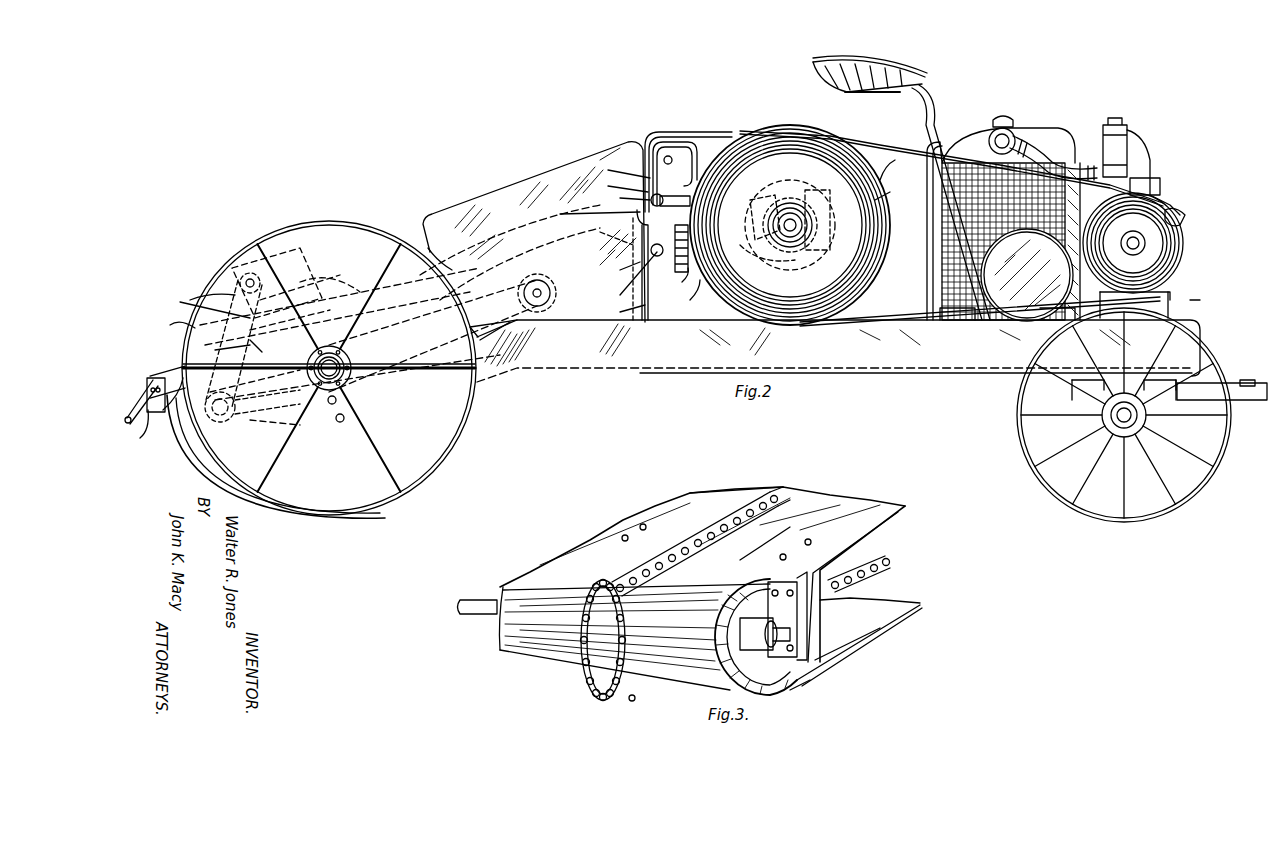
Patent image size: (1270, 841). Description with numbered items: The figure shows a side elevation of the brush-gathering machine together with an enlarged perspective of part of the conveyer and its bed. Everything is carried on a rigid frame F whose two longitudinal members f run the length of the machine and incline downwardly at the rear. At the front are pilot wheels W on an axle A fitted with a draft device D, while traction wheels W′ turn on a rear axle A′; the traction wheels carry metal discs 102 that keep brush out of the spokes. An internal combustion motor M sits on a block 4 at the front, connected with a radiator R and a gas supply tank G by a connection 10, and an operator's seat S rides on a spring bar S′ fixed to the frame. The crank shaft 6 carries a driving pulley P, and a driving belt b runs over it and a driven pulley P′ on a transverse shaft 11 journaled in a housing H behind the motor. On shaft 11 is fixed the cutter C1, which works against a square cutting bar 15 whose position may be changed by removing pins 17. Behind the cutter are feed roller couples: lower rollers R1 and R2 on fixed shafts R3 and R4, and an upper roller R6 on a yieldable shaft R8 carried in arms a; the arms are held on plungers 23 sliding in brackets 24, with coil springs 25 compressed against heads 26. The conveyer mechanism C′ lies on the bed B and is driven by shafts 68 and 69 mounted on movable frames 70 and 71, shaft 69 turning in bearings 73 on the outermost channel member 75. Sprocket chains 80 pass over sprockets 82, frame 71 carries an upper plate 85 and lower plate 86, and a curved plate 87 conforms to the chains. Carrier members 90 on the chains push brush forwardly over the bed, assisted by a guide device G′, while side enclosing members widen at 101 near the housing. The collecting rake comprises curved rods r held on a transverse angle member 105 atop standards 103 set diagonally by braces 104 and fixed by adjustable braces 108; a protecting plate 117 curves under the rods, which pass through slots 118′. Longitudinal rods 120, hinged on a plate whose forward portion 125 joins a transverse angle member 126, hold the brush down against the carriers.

In FIG. 2, the traction wheels W′ is at (380, 218).
In FIG. 2, the pilot wheels W is at (1017, 415).
In FIG. 2, the axle A is at (1130, 418).
In FIG. 2, the rear axle A′ is at (345, 362).
In FIG. 2, the bed B is at (360, 334).
In FIG. 3, the bed B is at (702, 591).
In FIG. 2, the conveyer mechanism C′ is at (347, 292).
In FIG. 2, the cutter C1 is at (817, 230).
In FIG. 2, the draft device D is at (1235, 382).
In FIG. 2, the frame F is at (838, 339).
In FIG. 2, the longitudinal members f is at (1195, 313).
In FIG. 2, the gas supply tank G is at (1010, 242).
In FIG. 2, the guide device G′ is at (155, 388).
In FIG. 2, the housing H is at (738, 128).
In FIG. 2, the internal combustion motor M is at (1160, 185).
In FIG. 2, the driving pulley P is at (1150, 258).
In FIG. 2, the driven pulley P′ is at (890, 190).
In FIG. 2, the radiator R is at (1020, 136).
In FIG. 2, the lower roller R1 is at (790, 225).
In FIG. 2, the lower roller R2 is at (628, 276).
In FIG. 2, the transverse shaft R3 is at (790, 224).
In FIG. 2, the transverse shaft R4 is at (621, 309).
In FIG. 2, the upper roller R6 is at (619, 171).
In FIG. 2, the yieldable transverse shaft R8 is at (616, 185).
In FIG. 2, the operator's seat S is at (915, 70).
In FIG. 2, the spring bar S′ is at (926, 118).
In FIG. 2, the arms a is at (629, 195).
In FIG. 2, the driving belt b is at (887, 170).
In FIG. 2, the slot c is at (666, 158).
In FIG. 2, the guard n is at (185, 458).
In FIG. 2, the curved rods r is at (192, 304).
In FIG. 2, the block 4 is at (1146, 295).
In FIG. 2, the crank shaft 6 is at (1140, 244).
In FIG. 2, the pipe 10 is at (1050, 152).
In FIG. 2, the transverse shaft 11 is at (798, 224).
In FIG. 2, the cutting bar 15 is at (764, 209).
In FIG. 2, the pins 17 is at (767, 267).
In FIG. 2, the plungers 23 is at (600, 213).
In FIG. 2, the brackets 24 is at (623, 261).
In FIG. 2, the coil springs 25 is at (681, 281).
In FIG. 2, the head 26 is at (685, 294).
In FIG. 2, the transverse shaft 68 is at (552, 292).
In FIG. 2, the transverse shaft 69 is at (300, 398).
In FIG. 3, the transverse shaft 69 is at (815, 677).
In FIG. 2, the movable frame 70 is at (500, 332).
In FIG. 2, the movable frame 71 is at (327, 414).
In FIG. 3, the bearings 73 is at (795, 622).
In FIG. 3, the outermost channel member 75 is at (847, 647).
In FIG. 2, the sprocket chains 80 is at (482, 256).
In FIG. 3, the sprocket chains 80 is at (625, 566).
In FIG. 3, the sprockets 82 is at (598, 685).
In FIG. 3, the upper plate 85 is at (848, 504).
In FIG. 3, the lower plate 86 is at (890, 603).
In FIG. 3, the curved plate 87 is at (624, 638).
In FIG. 2, the carrier members 90 is at (240, 430).
In FIG. 2, the wider portion of side enclosing members 101 is at (534, 232).
In FIG. 2, the metal discs 102 is at (310, 262).
In FIG. 2, the standards 103 is at (302, 287).
In FIG. 2, the braces 104 is at (298, 318).
In FIG. 2, the transverse angle member 105 is at (262, 275).
In FIG. 2, the adjustable braces 108 is at (225, 300).
In FIG. 2, the protecting plate 117 is at (262, 325).
In FIG. 2, the slots 118′ is at (175, 324).
In FIG. 2, the longitudinal rods 120 is at (381, 338).
In FIG. 2, the forward portion 125 is at (222, 347).
In FIG. 2, the transverse angle member 126 is at (254, 352).